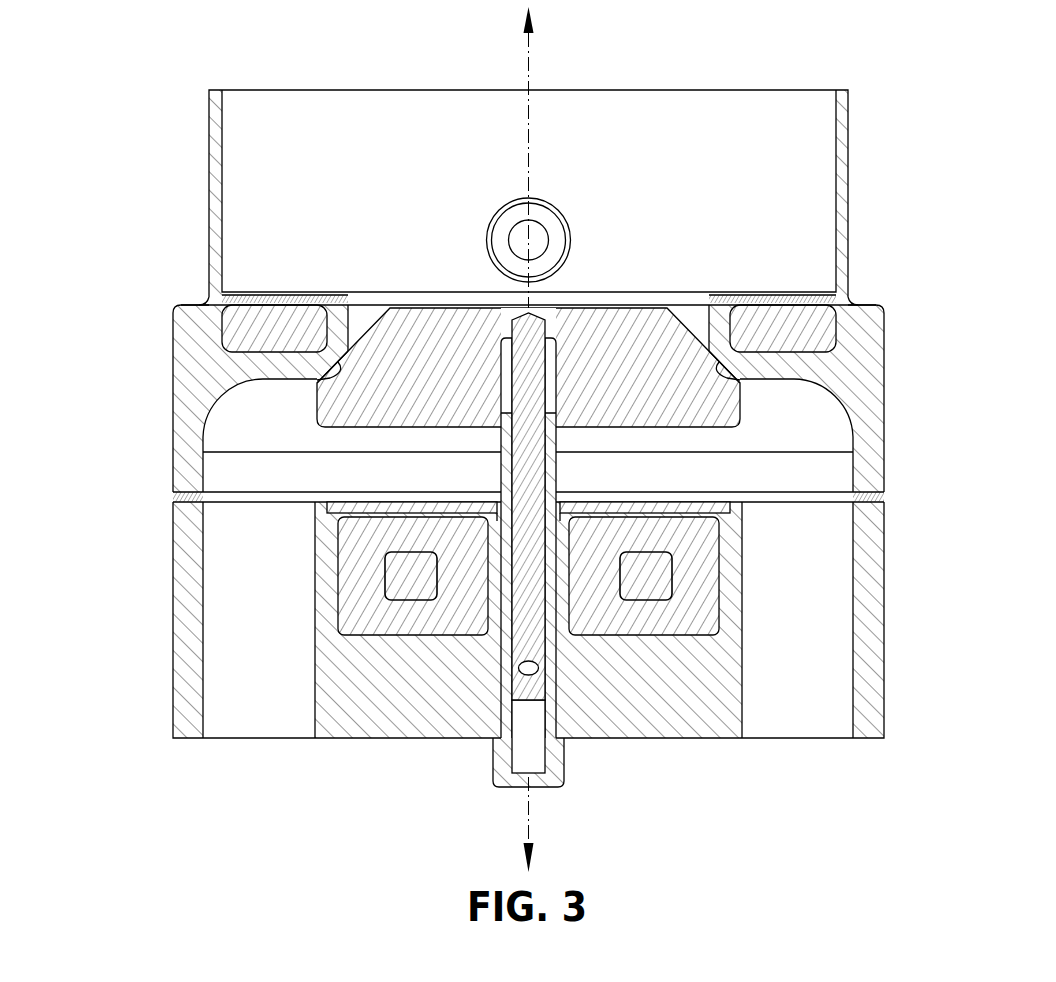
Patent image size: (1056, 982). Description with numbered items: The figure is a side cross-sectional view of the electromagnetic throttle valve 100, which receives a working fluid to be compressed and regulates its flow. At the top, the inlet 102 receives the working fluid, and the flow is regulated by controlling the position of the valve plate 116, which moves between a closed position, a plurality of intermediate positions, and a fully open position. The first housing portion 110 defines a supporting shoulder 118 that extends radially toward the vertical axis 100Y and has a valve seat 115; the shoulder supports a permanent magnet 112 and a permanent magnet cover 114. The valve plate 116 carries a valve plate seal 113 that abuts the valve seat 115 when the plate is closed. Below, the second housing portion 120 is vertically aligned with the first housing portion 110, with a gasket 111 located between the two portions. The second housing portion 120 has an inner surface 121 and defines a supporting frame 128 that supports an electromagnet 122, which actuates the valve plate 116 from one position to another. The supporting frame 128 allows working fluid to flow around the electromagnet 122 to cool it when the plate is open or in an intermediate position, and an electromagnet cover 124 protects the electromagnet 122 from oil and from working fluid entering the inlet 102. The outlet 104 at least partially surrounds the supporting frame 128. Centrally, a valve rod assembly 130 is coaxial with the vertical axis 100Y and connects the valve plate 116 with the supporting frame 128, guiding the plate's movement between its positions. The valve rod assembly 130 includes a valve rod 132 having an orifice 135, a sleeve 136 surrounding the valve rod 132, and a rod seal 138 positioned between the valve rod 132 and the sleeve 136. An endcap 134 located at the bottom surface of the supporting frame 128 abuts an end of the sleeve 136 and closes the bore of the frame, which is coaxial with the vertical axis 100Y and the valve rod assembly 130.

The electromagnetic throttle valve 100 is at (962, 92).
The axis 100Y is at (528, 80).
The inlet 102 is at (734, 68).
The outlet 104 is at (852, 760).
The first housing portion 110 is at (877, 410).
The gasket 111 is at (175, 497).
The permanent magnet 112 is at (822, 334).
The valve plate seal 113 is at (340, 366).
The permanent magnet cover 114 is at (828, 298).
The valve seat 115 is at (338, 368).
The valve plate 116 is at (702, 415).
The supporting shoulder 118 is at (782, 367).
The second housing portion 120 is at (875, 577).
The inner surface 121 is at (205, 700).
The electromagnet 122 is at (690, 575).
The electromagnet cover 124 is at (707, 503).
The supporting frame 128 is at (690, 668).
The valve rod assembly 130 is at (483, 478).
The valve rod 132 is at (522, 662).
The endcap 134 is at (495, 749).
The orifice 135 is at (556, 674).
The sleeve 136 is at (555, 644).
The rod seal 138 is at (502, 643).